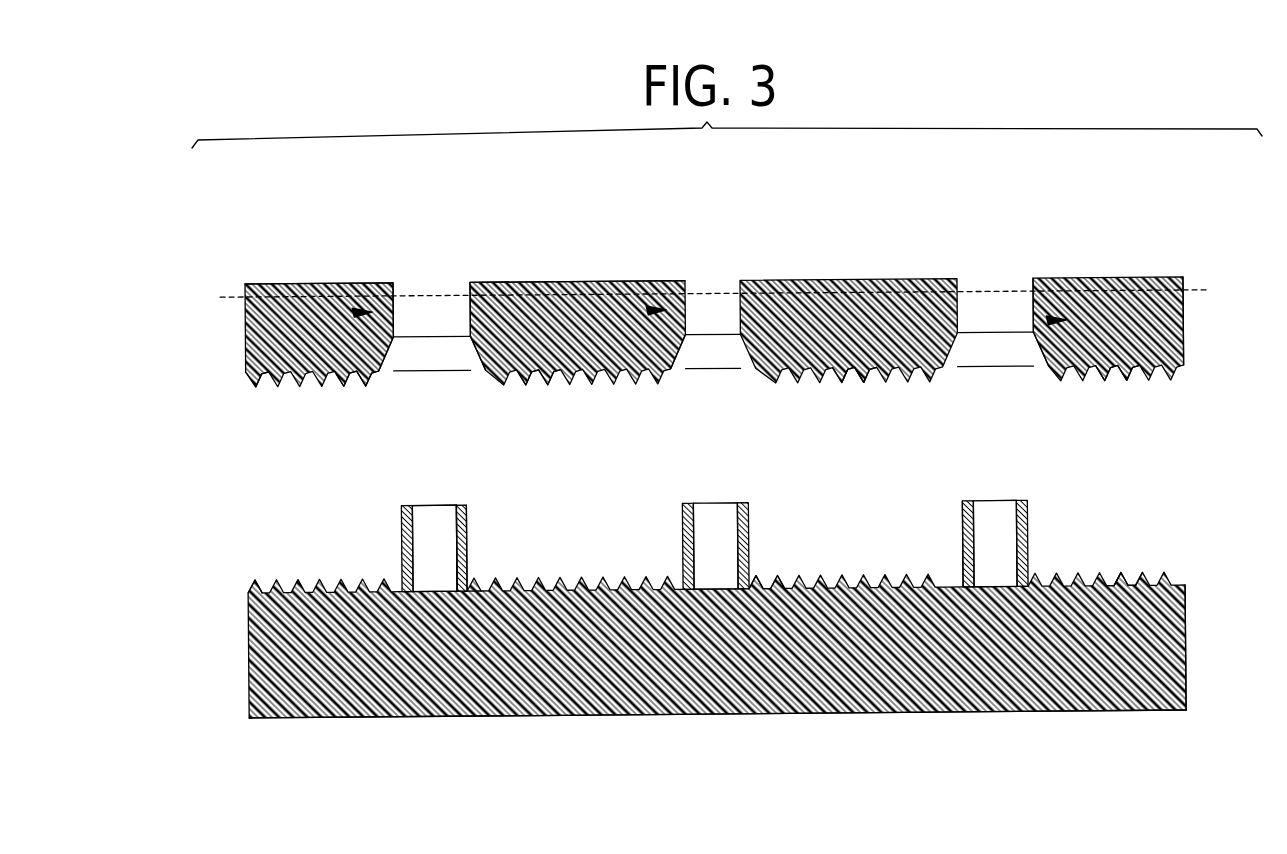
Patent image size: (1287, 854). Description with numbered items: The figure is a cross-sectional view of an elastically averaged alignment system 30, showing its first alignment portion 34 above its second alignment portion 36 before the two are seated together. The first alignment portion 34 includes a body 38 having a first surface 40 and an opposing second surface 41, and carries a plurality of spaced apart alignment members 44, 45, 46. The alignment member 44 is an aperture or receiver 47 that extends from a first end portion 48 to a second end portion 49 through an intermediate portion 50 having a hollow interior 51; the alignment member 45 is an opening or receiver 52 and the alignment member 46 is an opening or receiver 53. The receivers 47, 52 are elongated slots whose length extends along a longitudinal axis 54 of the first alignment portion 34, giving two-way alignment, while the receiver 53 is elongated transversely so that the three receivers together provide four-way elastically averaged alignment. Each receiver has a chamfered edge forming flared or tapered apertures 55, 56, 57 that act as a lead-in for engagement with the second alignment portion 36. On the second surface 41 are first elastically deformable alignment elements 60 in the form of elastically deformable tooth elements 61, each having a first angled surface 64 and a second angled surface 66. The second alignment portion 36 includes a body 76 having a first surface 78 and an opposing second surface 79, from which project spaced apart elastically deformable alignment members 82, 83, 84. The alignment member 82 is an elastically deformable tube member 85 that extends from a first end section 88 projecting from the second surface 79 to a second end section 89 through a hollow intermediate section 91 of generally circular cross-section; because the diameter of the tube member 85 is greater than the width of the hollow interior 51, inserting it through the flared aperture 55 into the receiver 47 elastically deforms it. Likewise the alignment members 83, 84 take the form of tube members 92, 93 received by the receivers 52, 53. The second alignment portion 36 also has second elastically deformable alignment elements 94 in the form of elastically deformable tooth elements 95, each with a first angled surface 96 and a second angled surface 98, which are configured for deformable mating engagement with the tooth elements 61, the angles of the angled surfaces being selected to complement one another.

The elastically averaged alignment system 30 is at (230, 523).
The first alignment portion 34 is at (223, 285).
The second alignment portion 36 is at (220, 737).
The body 38 is at (1193, 279).
The first surface 40 is at (577, 283).
The second surface 41 is at (268, 388).
The alignment member 44 is at (320, 284).
The alignment member 45 is at (1108, 378).
The alignment member 46 is at (627, 283).
The receiver 47 is at (466, 317).
The first end portion 48 is at (393, 286).
The second end portion 49 is at (535, 380).
The intermediate portion 50 is at (365, 388).
The hollow interior 51 is at (394, 326).
The receiver 52 is at (1032, 310).
The receiver 53 is at (738, 314).
The longitudinal axis 54 is at (1197, 297).
The tapered aperture 55 is at (472, 370).
The tapered aperture 56 is at (1035, 373).
The tapered aperture 57 is at (680, 372).
The first elastically deformable alignment elements 60 is at (858, 394).
The elastically deformable tooth element 61 is at (843, 393).
The first angled surface 64 is at (830, 388).
The second angled surface 66 is at (858, 387).
The body 76 is at (1187, 676).
The first surface 78 is at (280, 720).
The second surface 79 is at (258, 592).
The elastically deformable alignment member 82 is at (480, 513).
The elastically deformable alignment member 83 is at (962, 510).
The elastically deformable alignment member 84 is at (766, 555).
The elastically deformable tube member 85 is at (402, 530).
The first end section 88 is at (468, 583).
The second end section 89 is at (428, 507).
The hollow intermediate section 91 is at (468, 548).
The tube member 92 is at (962, 530).
The tube member 93 is at (682, 535).
The second elastically deformable alignment elements 94 is at (1134, 570).
The elastically deformable tooth element 95 is at (1126, 572).
The first angled surface 96 is at (1135, 575).
The second angled surface 98 is at (1118, 578).